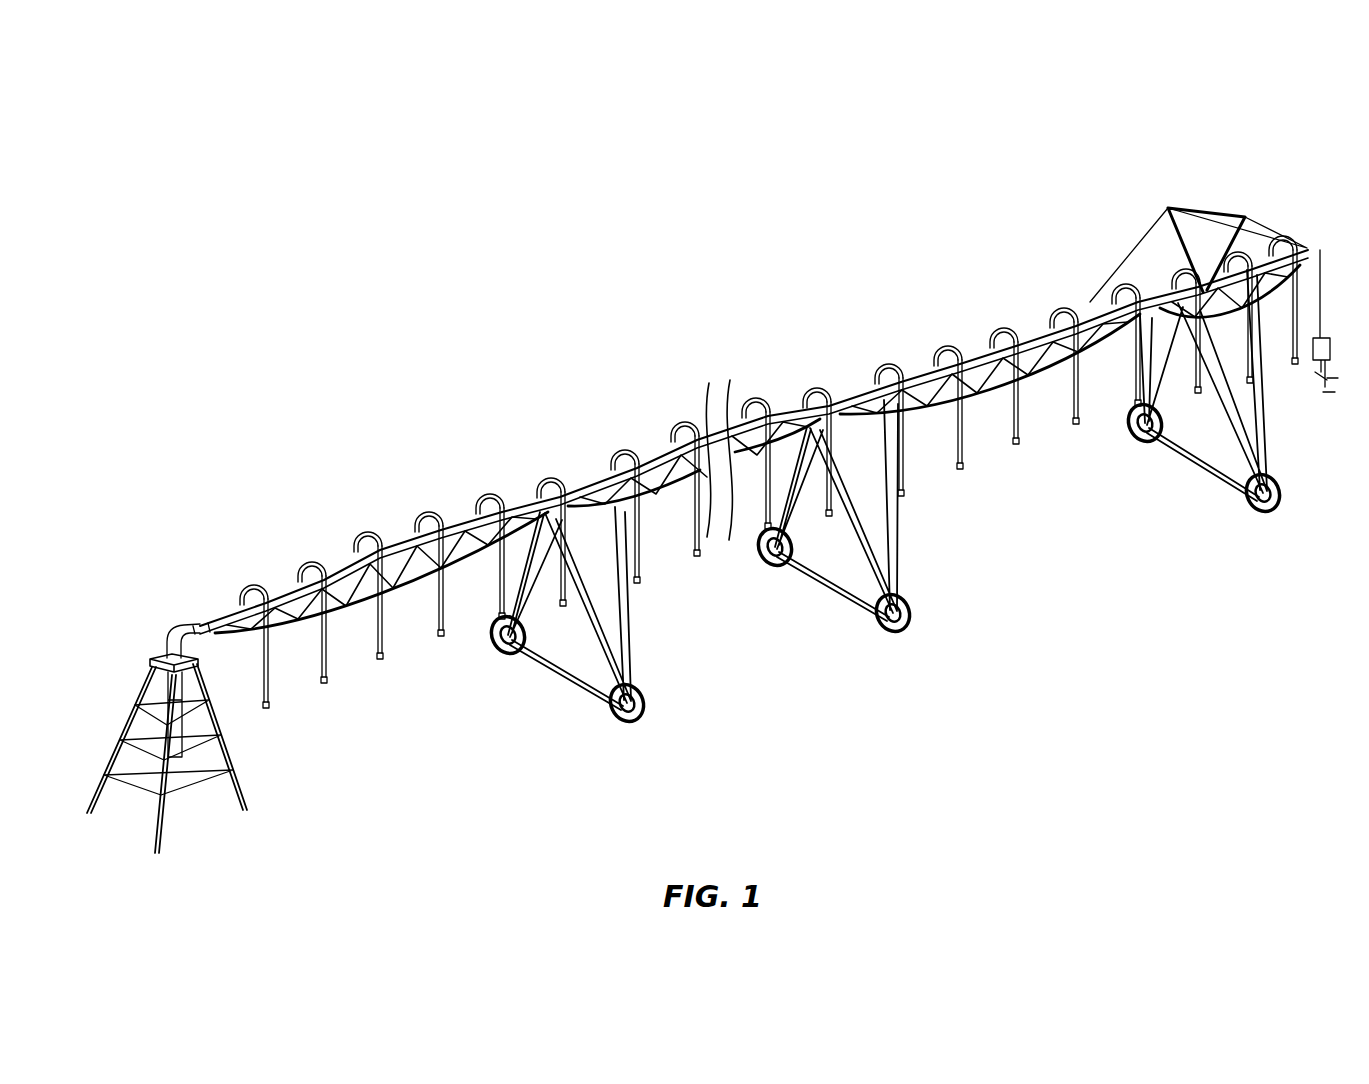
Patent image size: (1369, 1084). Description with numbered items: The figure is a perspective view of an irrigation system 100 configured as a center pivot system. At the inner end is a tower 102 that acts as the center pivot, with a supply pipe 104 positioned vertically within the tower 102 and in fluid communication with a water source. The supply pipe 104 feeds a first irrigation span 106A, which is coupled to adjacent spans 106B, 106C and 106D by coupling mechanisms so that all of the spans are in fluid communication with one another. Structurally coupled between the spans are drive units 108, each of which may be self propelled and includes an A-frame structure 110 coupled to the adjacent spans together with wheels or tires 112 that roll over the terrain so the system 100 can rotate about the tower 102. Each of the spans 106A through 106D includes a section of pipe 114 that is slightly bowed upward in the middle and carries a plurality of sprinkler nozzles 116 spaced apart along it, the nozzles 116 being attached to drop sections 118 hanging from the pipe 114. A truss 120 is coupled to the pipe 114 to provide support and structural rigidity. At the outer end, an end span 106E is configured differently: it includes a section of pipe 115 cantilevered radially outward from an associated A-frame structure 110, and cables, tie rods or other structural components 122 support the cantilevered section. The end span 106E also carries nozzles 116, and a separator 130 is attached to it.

The irrigation system 100 is at (558, 370).
The tower 102 is at (252, 748).
The supply pipe 104 is at (220, 708).
The first irrigation span 106A is at (360, 510).
The irrigation span 106B is at (628, 445).
The irrigation span 106C is at (777, 393).
The irrigation span 106D is at (995, 305).
The end span 106E is at (1255, 245).
The drive unit 108 is at (866, 525).
The A-frame structure 110 is at (627, 653).
The wheels or tires 112 is at (500, 632).
The section of pipe 114 is at (228, 623).
The section of pipe 115 is at (1302, 245).
The sprinkler nozzles 116 is at (380, 655).
The drop sections 118 is at (400, 620).
The truss 120 is at (395, 548).
The structural components 122 is at (1150, 215).
The separator 130 is at (1323, 403).